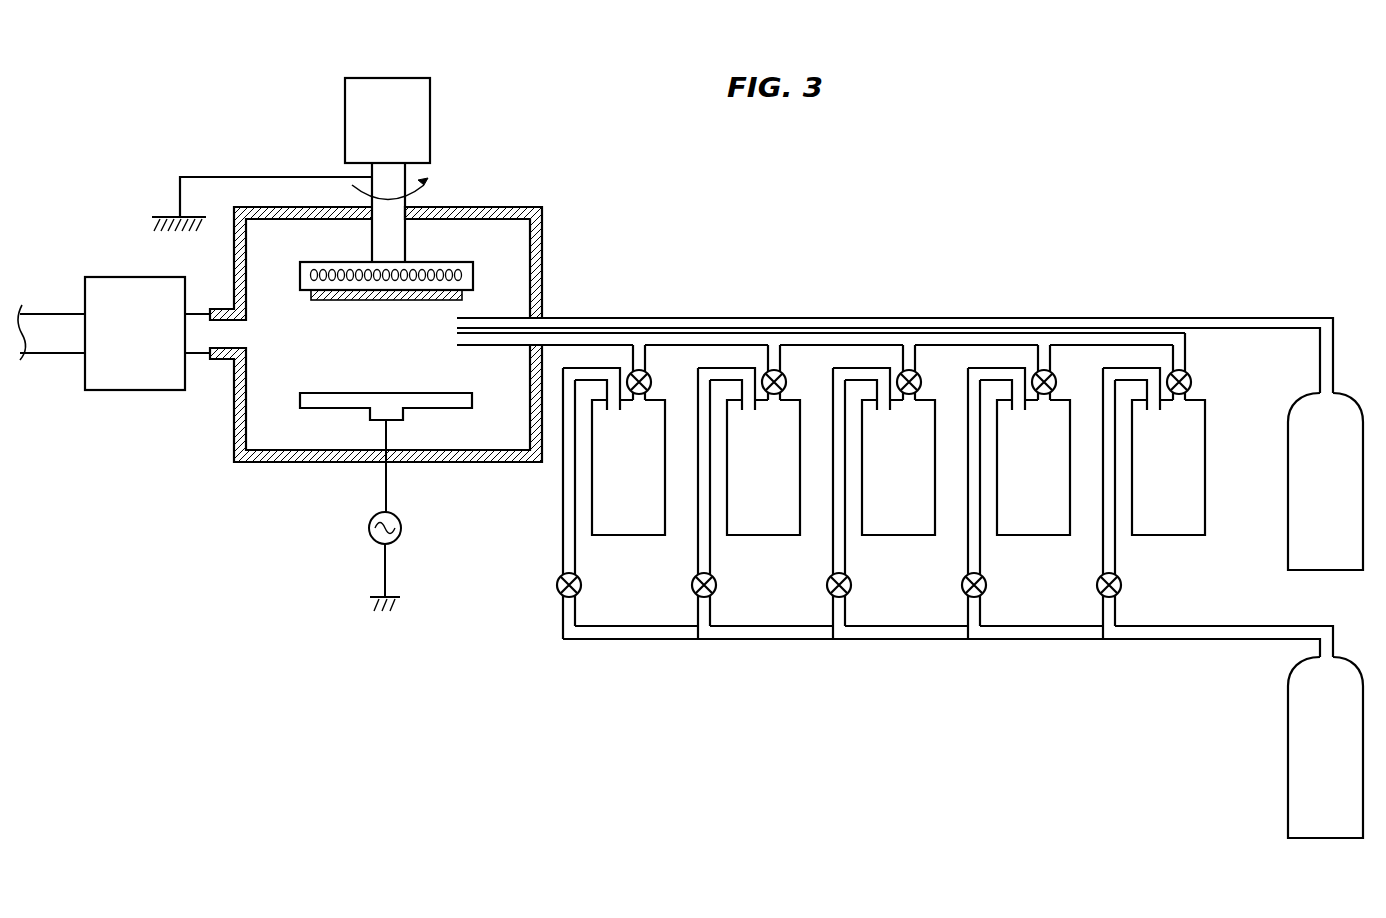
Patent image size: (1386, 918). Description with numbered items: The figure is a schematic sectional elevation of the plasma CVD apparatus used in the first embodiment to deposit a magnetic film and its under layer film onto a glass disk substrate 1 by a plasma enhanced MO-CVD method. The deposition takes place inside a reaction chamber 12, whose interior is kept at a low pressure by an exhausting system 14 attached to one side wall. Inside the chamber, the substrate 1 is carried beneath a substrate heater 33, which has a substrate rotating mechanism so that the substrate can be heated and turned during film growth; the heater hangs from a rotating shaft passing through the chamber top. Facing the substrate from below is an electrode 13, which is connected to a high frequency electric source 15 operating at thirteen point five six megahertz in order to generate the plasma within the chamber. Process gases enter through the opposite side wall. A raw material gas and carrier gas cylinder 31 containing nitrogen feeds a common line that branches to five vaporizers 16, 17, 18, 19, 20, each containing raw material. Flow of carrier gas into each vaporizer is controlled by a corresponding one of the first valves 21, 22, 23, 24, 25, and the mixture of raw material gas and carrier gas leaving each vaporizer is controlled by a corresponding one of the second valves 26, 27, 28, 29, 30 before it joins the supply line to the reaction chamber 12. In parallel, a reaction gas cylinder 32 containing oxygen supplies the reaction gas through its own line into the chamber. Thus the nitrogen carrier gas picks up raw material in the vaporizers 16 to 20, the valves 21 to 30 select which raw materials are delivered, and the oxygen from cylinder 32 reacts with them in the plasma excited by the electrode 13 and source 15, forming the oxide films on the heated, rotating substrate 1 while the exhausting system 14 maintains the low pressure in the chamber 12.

The glass disk substrate 1 is at (345, 300).
The reaction chamber 12 is at (485, 462).
The electrode 13 is at (330, 408).
The exhausting system 14 is at (108, 293).
The high frequency electric source 15 is at (393, 514).
The vaporizer 16 is at (628, 537).
The vaporizer 17 is at (763, 537).
The vaporizer 18 is at (898, 537).
The vaporizer 19 is at (1033, 537).
The vaporizer 20 is at (1168, 537).
The first valve 21 is at (600, 583).
The first valve 22 is at (735, 583).
The first valve 23 is at (870, 583).
The first valve 24 is at (1005, 583).
The first valve 25 is at (1140, 583).
The second valve 26 is at (670, 378).
The second valve 27 is at (805, 378).
The second valve 28 is at (940, 378).
The second valve 29 is at (1075, 378).
The second valve 30 is at (1210, 378).
The raw material gas and carrier gas cylinder 31 is at (1288, 758).
The reaction gas cylinder 32 is at (1288, 492).
The substrate heater 33 is at (448, 262).